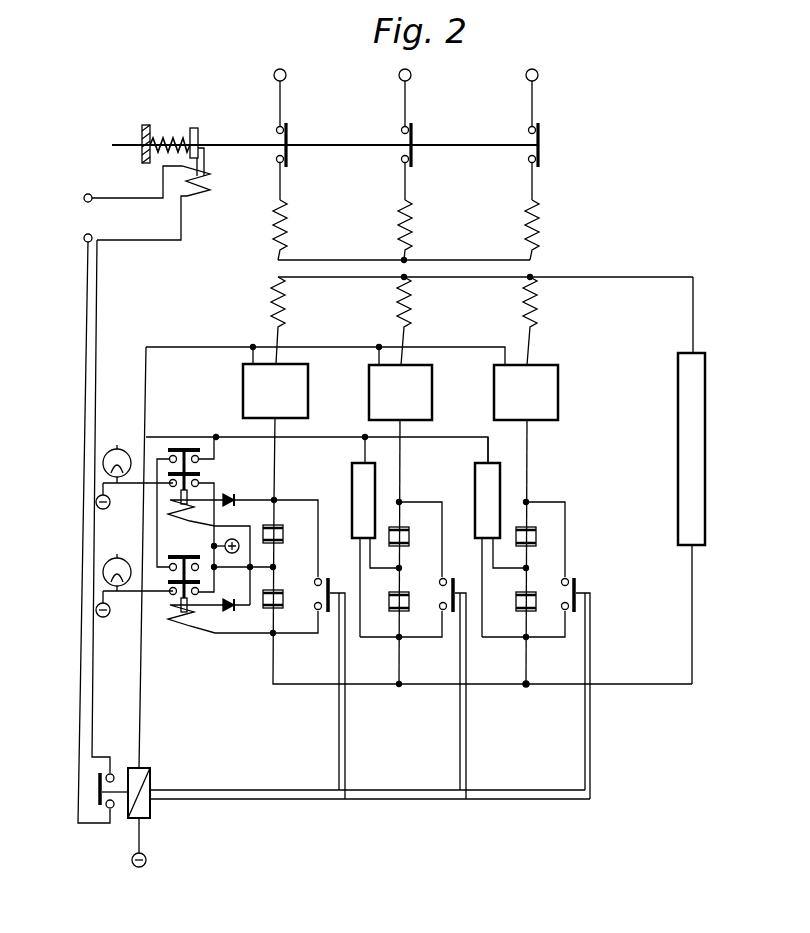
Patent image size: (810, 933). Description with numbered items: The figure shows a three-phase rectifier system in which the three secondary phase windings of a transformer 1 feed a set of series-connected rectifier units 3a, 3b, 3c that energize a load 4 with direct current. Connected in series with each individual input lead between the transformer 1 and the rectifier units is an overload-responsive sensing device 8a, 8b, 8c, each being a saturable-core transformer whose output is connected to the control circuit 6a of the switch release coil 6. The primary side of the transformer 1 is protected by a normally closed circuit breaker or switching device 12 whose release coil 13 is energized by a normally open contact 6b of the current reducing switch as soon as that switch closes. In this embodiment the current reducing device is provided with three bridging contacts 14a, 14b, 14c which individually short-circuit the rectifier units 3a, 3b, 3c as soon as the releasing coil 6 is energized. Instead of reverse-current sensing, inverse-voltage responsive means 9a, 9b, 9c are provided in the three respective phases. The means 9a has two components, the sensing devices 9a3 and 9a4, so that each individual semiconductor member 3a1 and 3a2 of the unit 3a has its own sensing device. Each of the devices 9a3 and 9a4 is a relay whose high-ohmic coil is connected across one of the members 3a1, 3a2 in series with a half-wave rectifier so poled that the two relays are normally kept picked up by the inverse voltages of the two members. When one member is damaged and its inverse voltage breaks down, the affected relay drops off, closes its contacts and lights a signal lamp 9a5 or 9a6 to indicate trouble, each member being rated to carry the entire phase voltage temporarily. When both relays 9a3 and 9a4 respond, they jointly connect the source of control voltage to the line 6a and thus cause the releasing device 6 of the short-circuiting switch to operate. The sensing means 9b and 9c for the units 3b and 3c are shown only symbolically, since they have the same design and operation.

The switching device 12 is at (476, 131).
The release coil 13 is at (163, 183).
The transformer 1 is at (256, 284).
The control circuit 6a is at (146, 384).
The overload-responsive sensing device 8a is at (275, 391).
The overload-responsive sensing device 8b is at (400, 392).
The overload-responsive sensing device 8c is at (526, 392).
The signal lamp 9a5 is at (134, 468).
The signal lamp 9a6 is at (134, 577).
The sensing device relay 9a3 is at (262, 474).
The sensing device relay 9a4 is at (265, 635).
The inverse-voltage responsive means 9a is at (222, 671).
The inverse-voltage responsive means 9b is at (352, 479).
The inverse-voltage responsive means 9c is at (475, 476).
The rectifier unit 3a is at (304, 583).
The semiconductor member 3a1 is at (289, 535).
The semiconductor member 3a2 is at (289, 601).
The rectifier unit 3b is at (401, 570).
The rectifier unit 3c is at (523, 570).
The bridging contact 14a is at (322, 588).
The bridging contact 14b is at (447, 588).
The bridging contact 14c is at (573, 588).
The load 4 is at (680, 458).
The switch release coil 6 is at (169, 766).
The normally open contact 6b is at (100, 806).